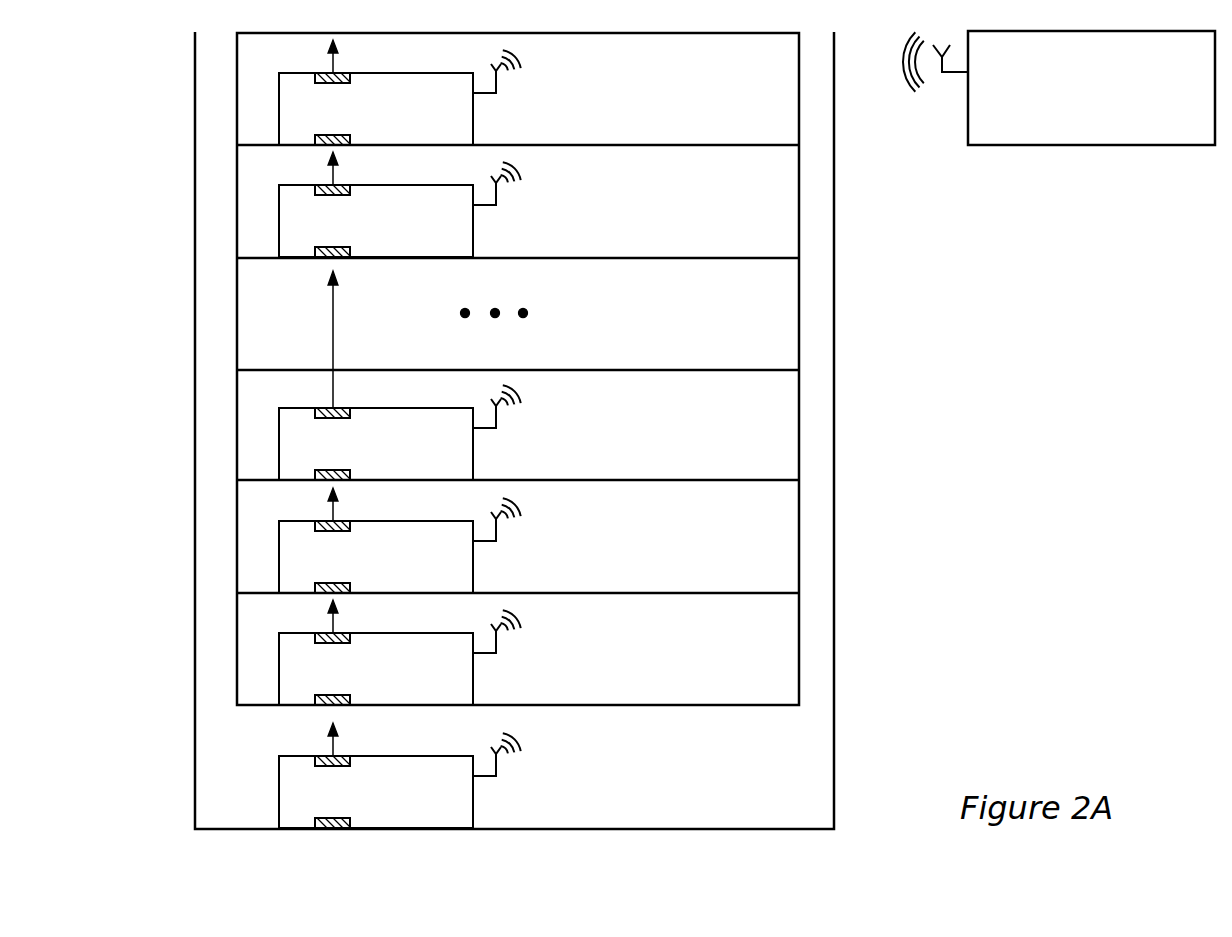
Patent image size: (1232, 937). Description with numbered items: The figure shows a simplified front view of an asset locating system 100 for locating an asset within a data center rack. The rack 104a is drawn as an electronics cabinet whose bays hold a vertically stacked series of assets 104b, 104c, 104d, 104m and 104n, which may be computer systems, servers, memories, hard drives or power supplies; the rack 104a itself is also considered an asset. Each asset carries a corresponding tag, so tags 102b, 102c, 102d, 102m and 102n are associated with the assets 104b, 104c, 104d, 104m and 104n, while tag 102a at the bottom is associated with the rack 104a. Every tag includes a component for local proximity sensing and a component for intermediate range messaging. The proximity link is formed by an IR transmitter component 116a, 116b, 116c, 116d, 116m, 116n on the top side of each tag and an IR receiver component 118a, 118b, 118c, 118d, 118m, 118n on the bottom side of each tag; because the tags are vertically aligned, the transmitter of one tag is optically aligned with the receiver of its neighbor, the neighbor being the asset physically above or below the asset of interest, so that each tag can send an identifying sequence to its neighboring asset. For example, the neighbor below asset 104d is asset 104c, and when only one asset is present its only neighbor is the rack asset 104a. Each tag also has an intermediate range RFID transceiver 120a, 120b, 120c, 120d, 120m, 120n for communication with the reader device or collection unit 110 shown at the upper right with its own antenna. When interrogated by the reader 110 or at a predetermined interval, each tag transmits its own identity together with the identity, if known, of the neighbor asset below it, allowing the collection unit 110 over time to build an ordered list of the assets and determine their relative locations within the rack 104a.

The asset locating system 100 is at (918, 299).
The reader device or collection unit 110 is at (1110, 132).
The rack 104a is at (836, 799).
The asset 104b is at (766, 629).
The asset 104c is at (766, 517).
The asset 104d is at (766, 404).
The asset 104m is at (770, 181).
The asset 104n is at (766, 69).
The tag 102a is at (407, 756).
The tag 102b is at (407, 633).
The tag 102c is at (407, 521).
The tag 102d is at (407, 408).
The tag 102m is at (407, 185).
The tag 102n is at (407, 73).
The IR transmitter component 116a is at (330, 818).
The IR transmitter component 116b is at (318, 705).
The IR transmitter component 116c is at (318, 593).
The IR transmitter component 116d is at (318, 480).
The IR transmitter component 116m is at (318, 258).
The IR transmitter component 116n is at (318, 145).
The IR receiver component 118a is at (318, 757).
The IR receiver component 118b is at (318, 634).
The IR receiver component 118c is at (318, 522).
The IR receiver component 118d is at (318, 409).
The IR receiver component 118m is at (318, 186).
The IR receiver component 118n is at (318, 74).
The RFID component 120a is at (532, 758).
The RFID component 120b is at (532, 635).
The RFID component 120c is at (532, 523).
The RFID component 120d is at (532, 410).
The RFID component 120m is at (532, 187).
The RFID component 120n is at (532, 75).